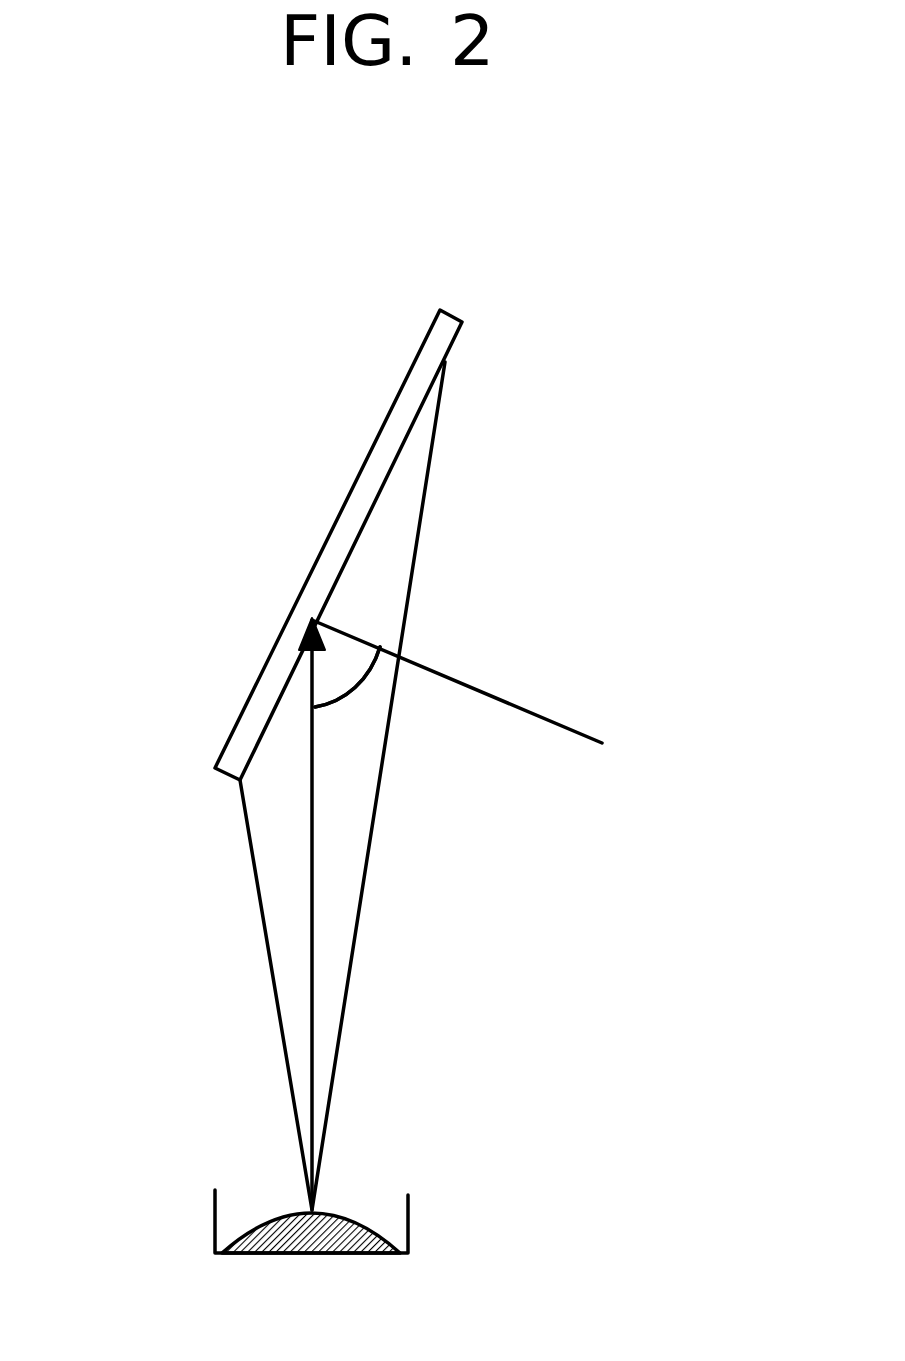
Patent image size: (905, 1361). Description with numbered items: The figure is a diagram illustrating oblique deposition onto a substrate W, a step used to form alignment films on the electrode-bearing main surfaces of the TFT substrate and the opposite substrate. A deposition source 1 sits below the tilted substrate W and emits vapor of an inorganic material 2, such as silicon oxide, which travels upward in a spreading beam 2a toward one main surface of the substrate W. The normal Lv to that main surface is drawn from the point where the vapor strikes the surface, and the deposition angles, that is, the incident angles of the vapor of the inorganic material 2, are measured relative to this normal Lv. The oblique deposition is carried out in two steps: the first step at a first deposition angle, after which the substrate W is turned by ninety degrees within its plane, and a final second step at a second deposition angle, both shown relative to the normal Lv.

The deposition source 1 is at (215, 1232).
The inorganic material 2 is at (357, 1220).
The light emitting region / light beam 2a is at (332, 962).
The substrate W is at (418, 355).
The normal Lv is at (508, 700).